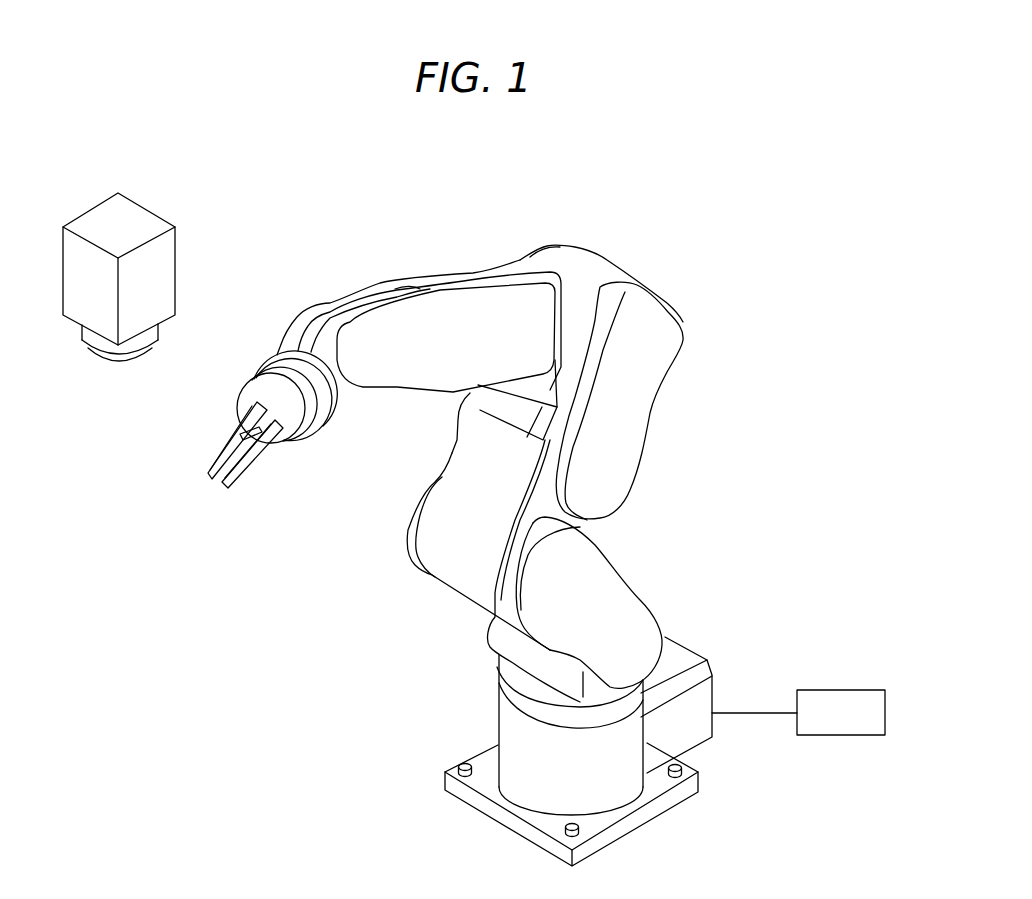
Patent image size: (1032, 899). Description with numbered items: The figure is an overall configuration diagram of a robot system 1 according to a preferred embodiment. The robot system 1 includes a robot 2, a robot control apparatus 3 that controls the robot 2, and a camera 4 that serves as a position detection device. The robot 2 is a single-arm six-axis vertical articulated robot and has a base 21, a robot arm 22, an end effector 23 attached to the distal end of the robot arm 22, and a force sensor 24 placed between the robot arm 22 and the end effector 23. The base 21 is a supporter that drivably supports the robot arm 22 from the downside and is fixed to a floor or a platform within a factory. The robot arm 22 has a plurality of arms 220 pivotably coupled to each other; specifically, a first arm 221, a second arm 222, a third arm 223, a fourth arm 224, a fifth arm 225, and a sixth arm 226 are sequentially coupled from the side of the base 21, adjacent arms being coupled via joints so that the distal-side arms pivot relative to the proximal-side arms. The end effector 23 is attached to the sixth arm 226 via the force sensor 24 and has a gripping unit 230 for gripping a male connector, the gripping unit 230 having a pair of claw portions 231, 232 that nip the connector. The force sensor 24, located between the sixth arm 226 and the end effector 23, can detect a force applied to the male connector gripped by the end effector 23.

The robot system 1 is at (697, 130).
The robot 2 is at (406, 224).
The robot control apparatus 3 is at (840, 688).
The camera 4 is at (137, 222).
The base 21 is at (520, 738).
The robot arm 22 is at (686, 321).
The arms 220 is at (484, 450).
The first arm 221 is at (610, 600).
The second arm 222 is at (612, 455).
The third arm 223 is at (600, 262).
The fourth arm 224 is at (470, 272).
The fifth arm 225 is at (306, 318).
The sixth arm 226 is at (287, 338).
The end effector 23 is at (246, 409).
The force sensor 24 is at (280, 368).
The gripping unit 230 is at (285, 573).
The claw portion 231 is at (255, 462).
The claw portion 232 is at (210, 482).